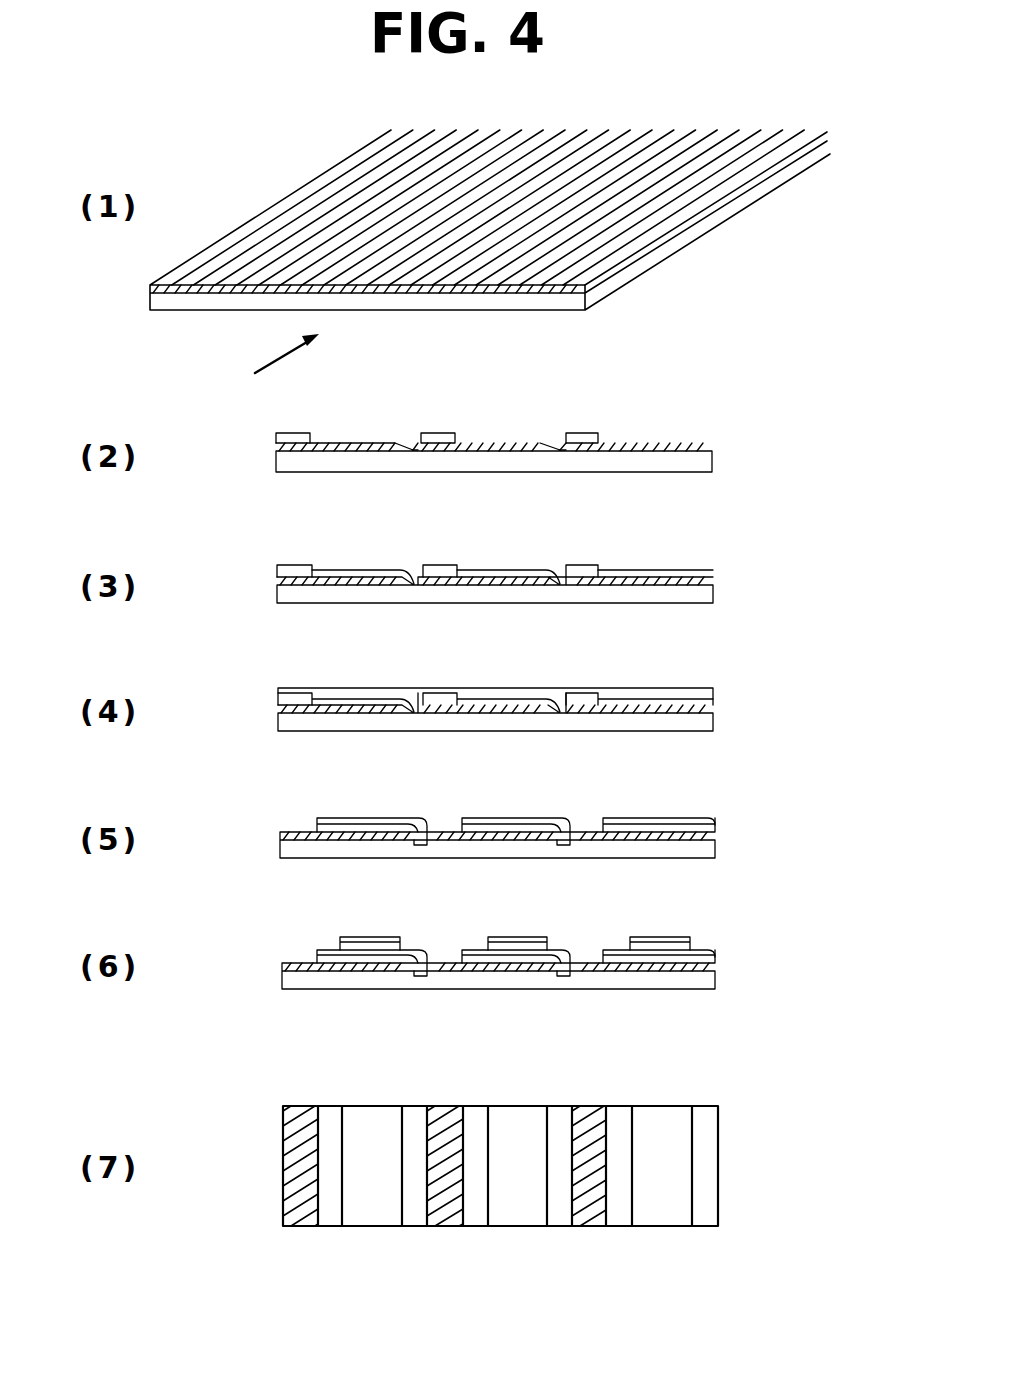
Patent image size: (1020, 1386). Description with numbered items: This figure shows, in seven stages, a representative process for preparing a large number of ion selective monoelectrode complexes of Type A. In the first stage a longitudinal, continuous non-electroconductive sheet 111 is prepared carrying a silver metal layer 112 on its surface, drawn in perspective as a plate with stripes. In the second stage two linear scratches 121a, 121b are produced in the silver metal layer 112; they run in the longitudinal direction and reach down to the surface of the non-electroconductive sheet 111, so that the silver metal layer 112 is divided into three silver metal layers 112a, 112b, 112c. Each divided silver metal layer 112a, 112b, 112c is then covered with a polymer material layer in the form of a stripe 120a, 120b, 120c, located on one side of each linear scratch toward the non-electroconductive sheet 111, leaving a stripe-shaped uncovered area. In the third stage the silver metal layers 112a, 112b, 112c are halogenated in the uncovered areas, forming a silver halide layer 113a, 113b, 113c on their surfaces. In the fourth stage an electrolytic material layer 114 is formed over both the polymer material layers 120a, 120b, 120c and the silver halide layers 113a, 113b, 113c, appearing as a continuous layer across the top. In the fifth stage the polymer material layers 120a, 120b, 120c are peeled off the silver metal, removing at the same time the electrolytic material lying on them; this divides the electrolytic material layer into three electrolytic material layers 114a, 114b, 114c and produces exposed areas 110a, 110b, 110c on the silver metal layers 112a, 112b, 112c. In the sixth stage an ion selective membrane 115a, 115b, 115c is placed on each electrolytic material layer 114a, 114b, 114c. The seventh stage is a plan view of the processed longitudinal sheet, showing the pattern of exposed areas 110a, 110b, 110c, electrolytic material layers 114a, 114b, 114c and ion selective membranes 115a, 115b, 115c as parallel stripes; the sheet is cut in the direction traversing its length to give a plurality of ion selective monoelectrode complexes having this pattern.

The non-electroconductive sheet 111 is at (640, 263).
The silver metal layer 112 is at (700, 220).
The divided silver metal layer 112a is at (347, 458).
The divided silver metal layer 112b is at (493, 458).
The divided silver metal layer 112c is at (637, 458).
The polymer material layer 120a is at (300, 433).
The polymer material layer 120b is at (436, 433).
The polymer material layer 120c is at (592, 433).
The linear scratch 121a is at (415, 450).
The linear scratch 121b is at (562, 450).
The silver halide layer 113a is at (362, 577).
The silver halide layer 113b is at (504, 577).
The silver halide layer 113c is at (650, 577).
The electrolytic material layer 114 is at (547, 688).
The electrolytic material layer 114a is at (370, 833).
The electrolytic material layer 114b is at (510, 833).
The electrolytic material layer 114c is at (652, 833).
The exposed area 110a is at (296, 832).
The exposed area 110b is at (445, 832).
The exposed area 110c is at (586, 832).
The ion selective membrane 115a is at (380, 937).
The ion selective membrane 115b is at (520, 937).
The ion selective membrane 115c is at (672, 937).